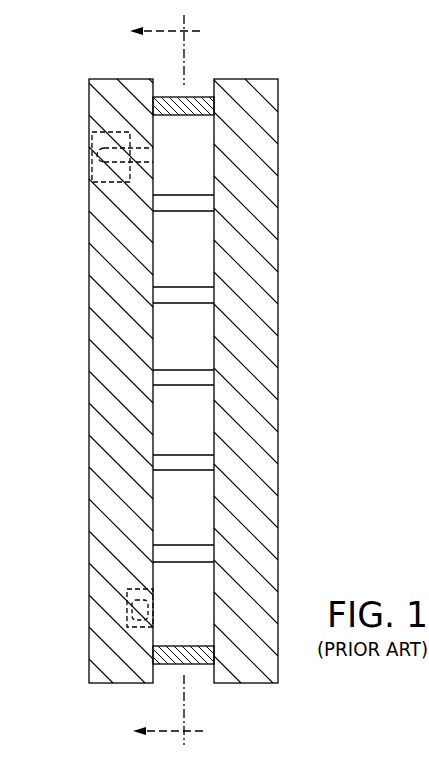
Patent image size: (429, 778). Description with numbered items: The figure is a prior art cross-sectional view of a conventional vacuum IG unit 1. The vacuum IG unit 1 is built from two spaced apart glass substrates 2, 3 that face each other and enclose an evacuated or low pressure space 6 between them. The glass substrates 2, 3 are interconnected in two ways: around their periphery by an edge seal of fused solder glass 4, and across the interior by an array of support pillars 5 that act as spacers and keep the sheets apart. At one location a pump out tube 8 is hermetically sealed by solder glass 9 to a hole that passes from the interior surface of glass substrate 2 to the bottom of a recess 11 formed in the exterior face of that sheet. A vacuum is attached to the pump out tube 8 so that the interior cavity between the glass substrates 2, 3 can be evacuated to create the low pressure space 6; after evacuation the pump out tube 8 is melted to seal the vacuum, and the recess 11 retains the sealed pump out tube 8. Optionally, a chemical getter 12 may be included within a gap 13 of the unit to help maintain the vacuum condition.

The vacuum IG unit 1 is at (290, 157).
The glass substrate 2 is at (90, 427).
The glass substrate 3 is at (250, 313).
The edge seal of fused solder glass 4 is at (193, 102).
The support pillars 5 is at (193, 557).
The evacuated or low pressure space 6 is at (170, 495).
The pump out tube 8 is at (100, 157).
The solder glass 9 is at (92, 141).
The recess 11 is at (101, 185).
The chemical getter 12 is at (137, 605).
The gap 13 is at (132, 632).